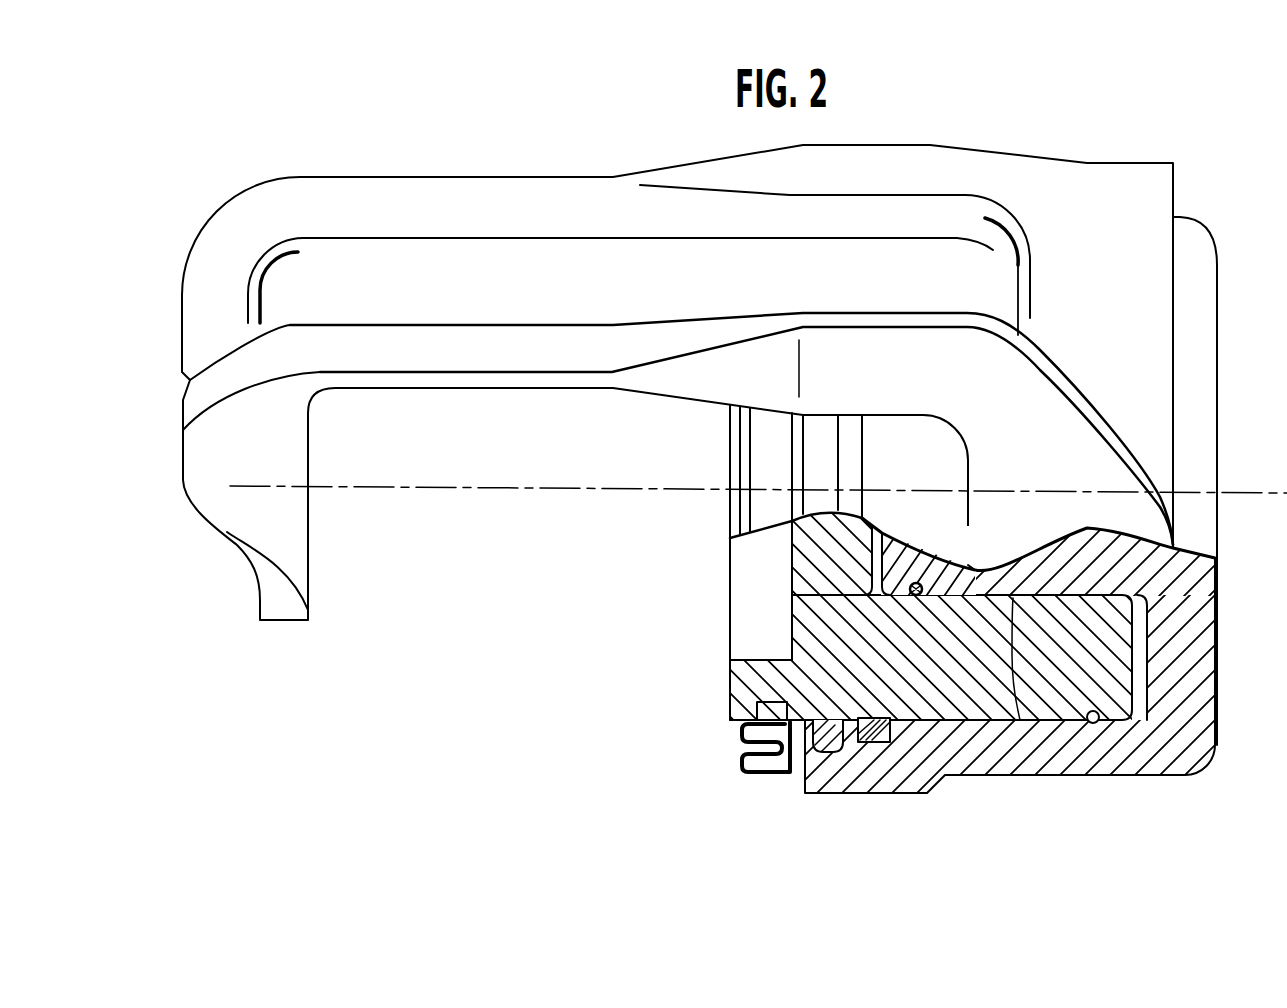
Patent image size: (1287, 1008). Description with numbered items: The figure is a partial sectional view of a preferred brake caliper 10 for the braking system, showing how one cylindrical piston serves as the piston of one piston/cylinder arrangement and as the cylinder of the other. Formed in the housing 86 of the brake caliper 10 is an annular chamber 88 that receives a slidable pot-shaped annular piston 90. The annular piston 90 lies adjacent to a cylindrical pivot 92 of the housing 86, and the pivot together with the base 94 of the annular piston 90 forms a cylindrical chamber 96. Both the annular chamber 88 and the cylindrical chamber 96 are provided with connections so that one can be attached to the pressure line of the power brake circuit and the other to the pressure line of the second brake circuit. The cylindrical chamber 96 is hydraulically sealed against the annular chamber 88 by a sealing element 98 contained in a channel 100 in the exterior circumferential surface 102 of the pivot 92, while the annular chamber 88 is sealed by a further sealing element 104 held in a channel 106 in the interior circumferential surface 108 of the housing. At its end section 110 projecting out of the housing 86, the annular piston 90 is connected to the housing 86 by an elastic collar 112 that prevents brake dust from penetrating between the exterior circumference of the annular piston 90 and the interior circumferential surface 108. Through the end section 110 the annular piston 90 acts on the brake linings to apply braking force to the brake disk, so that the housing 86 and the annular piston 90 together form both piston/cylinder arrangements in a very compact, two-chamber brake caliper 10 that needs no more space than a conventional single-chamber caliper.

The brake caliper 10 is at (1195, 219).
The housing 86 is at (1200, 447).
The annular chamber 88 is at (1138, 690).
The annular piston 90 is at (1107, 645).
The cylindrical pivot 92 is at (1047, 567).
The base 94 is at (817, 563).
The cylindrical chamber 96 is at (872, 578).
The sealing element 98 is at (918, 582).
The channel 100 is at (972, 552).
The exterior circumferential surface 102 is at (1020, 720).
The sealing element 104 is at (882, 742).
The channel 106 is at (847, 745).
The interior circumferential surface 108 is at (1098, 724).
The end section 110 is at (747, 677).
The elastic collar 112 is at (742, 777).